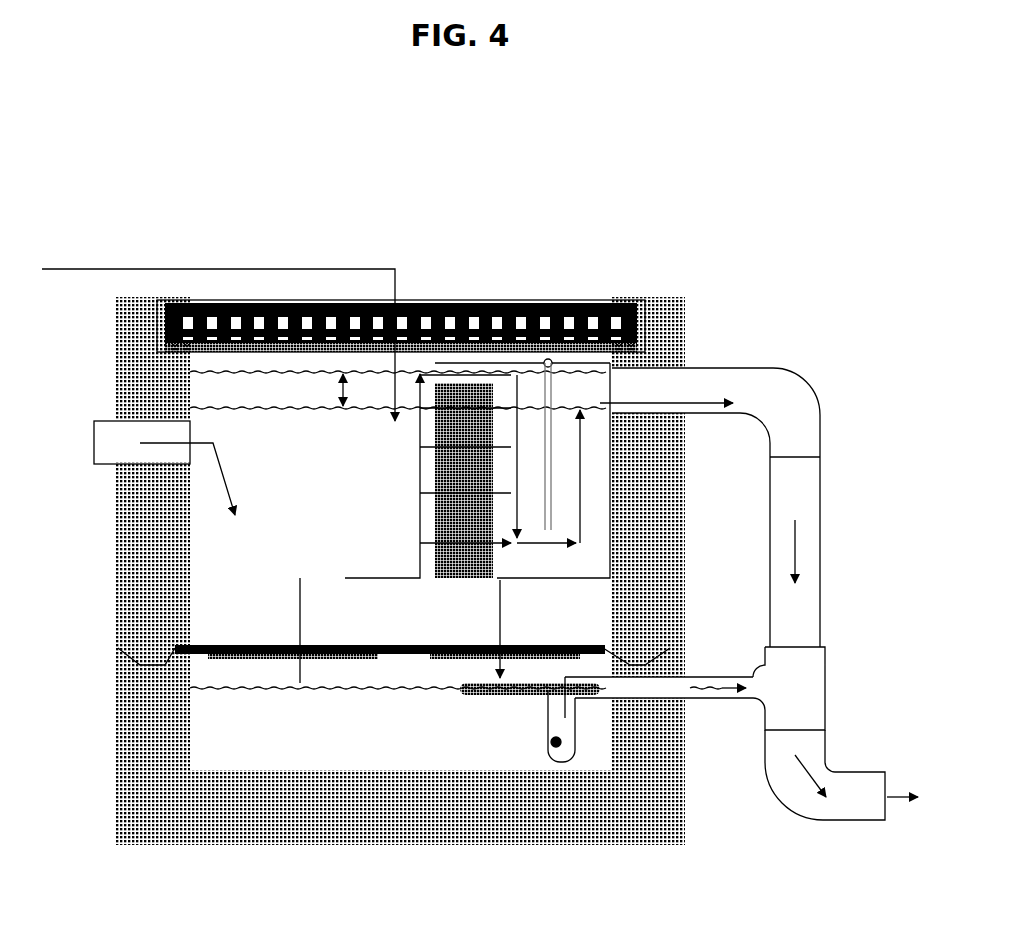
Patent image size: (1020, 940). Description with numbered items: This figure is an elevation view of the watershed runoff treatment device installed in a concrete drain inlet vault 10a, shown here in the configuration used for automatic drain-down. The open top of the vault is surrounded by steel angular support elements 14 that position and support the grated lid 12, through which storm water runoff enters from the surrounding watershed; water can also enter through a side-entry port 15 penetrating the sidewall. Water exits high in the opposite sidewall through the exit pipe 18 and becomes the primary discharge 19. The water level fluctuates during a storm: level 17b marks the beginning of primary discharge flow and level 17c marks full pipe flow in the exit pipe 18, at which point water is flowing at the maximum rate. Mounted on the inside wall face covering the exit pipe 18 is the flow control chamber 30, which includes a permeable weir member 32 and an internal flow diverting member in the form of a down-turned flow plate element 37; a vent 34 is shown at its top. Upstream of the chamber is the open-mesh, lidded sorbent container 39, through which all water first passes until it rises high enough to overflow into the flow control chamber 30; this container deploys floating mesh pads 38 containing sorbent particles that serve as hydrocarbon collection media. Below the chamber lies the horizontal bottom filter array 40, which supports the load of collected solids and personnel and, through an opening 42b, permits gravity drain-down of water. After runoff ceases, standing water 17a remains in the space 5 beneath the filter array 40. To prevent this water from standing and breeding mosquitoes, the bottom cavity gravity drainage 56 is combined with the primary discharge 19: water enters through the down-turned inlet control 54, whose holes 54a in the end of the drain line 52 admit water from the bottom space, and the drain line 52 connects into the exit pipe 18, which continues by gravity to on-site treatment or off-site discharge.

The sump 5 is at (215, 732).
The vault 10a is at (117, 572).
The grated lid 12 is at (300, 306).
The steel angular support elements 14 is at (645, 305).
The side-entry port 15 is at (125, 435).
The standing water 17a is at (345, 695).
The water level at beginning of primary discharge flow 17b is at (330, 412).
The water level at full pipe flow 17c is at (297, 374).
The exit pipe 18 is at (765, 594).
The primary discharge 19 is at (682, 397).
The flow control chamber 30 is at (597, 553).
The permeable weir member 32 is at (495, 572).
The vent 34 is at (507, 360).
The down-turned flow plate element 37 is at (548, 455).
The mesh pads 38 is at (435, 413).
The sorbent container 39 is at (468, 575).
The horizontal bottom filter array 40 is at (362, 645).
The opening in baffle plate 42b is at (400, 653).
The drain line 52 is at (637, 688).
The down-turned inlet control 54 is at (548, 727).
The holes 54a is at (553, 742).
The bottom cavity gravity drainage 56 is at (733, 688).